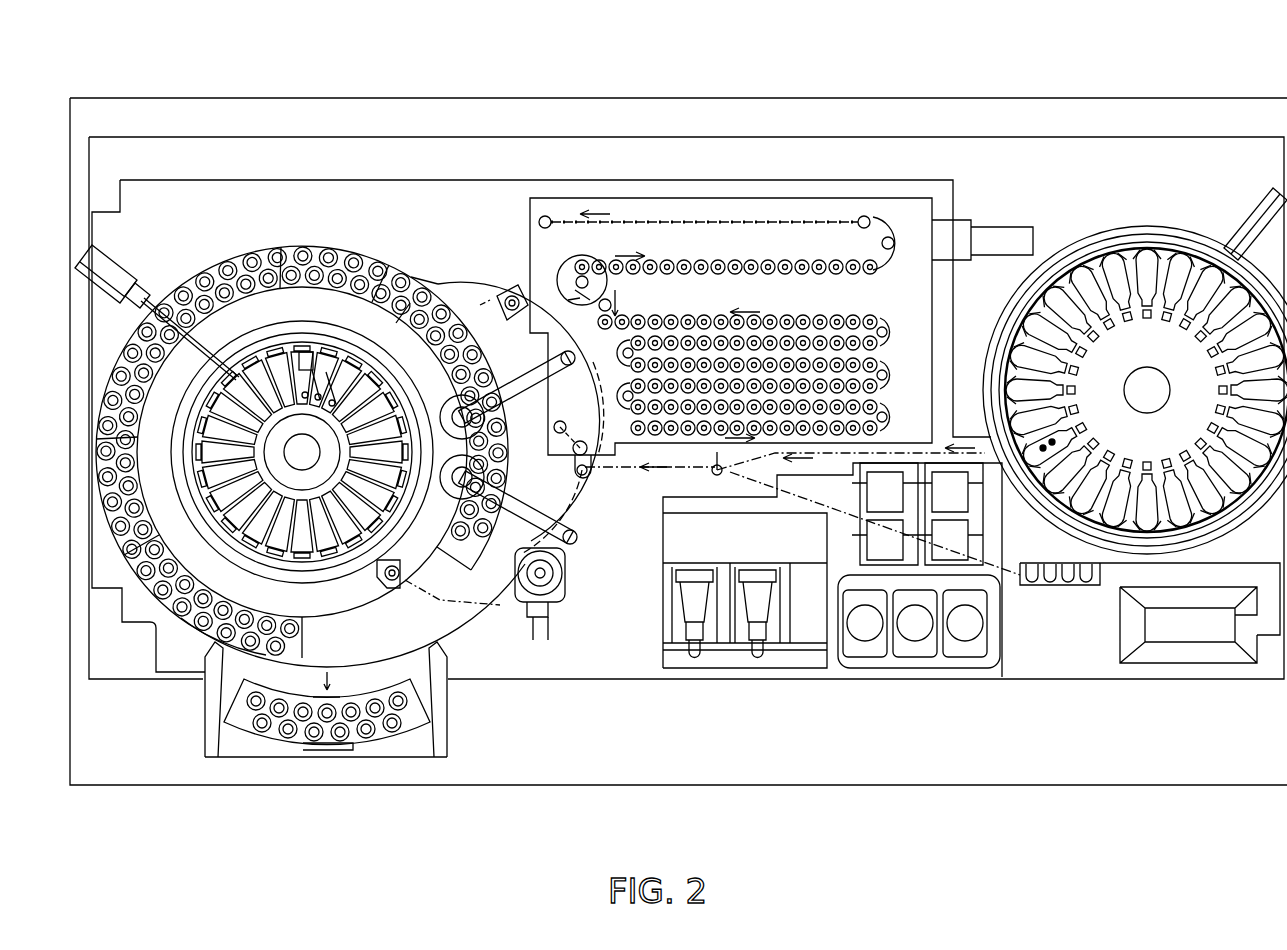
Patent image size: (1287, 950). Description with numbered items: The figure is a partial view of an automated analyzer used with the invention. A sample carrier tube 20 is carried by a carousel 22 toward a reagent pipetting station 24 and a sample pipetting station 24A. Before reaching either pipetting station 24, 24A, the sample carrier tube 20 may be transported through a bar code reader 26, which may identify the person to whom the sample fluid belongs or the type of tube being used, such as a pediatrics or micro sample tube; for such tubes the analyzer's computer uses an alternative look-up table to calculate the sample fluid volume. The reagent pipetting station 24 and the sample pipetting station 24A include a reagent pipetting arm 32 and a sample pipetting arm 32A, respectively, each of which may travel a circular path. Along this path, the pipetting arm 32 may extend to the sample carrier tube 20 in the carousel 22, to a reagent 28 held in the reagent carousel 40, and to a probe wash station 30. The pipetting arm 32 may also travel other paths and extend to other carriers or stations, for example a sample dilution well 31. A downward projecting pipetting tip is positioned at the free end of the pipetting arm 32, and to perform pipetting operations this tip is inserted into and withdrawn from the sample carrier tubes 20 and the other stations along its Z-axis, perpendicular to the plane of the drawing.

The sample carrier tube 20 is at (340, 400).
The carousel 22 is at (378, 247).
The reagent pipetting station 24 is at (506, 395).
The sample pipetting station 24A is at (506, 499).
The bar code reader 26 is at (115, 250).
The reagent 28 is at (345, 392).
The probe wash station 30 is at (512, 297).
The sample dilution well 31 is at (552, 600).
The reagent pipetting arm 32 is at (525, 330).
The sample pipetting arm 32A is at (530, 605).
The reagent carousel 40 is at (307, 372).